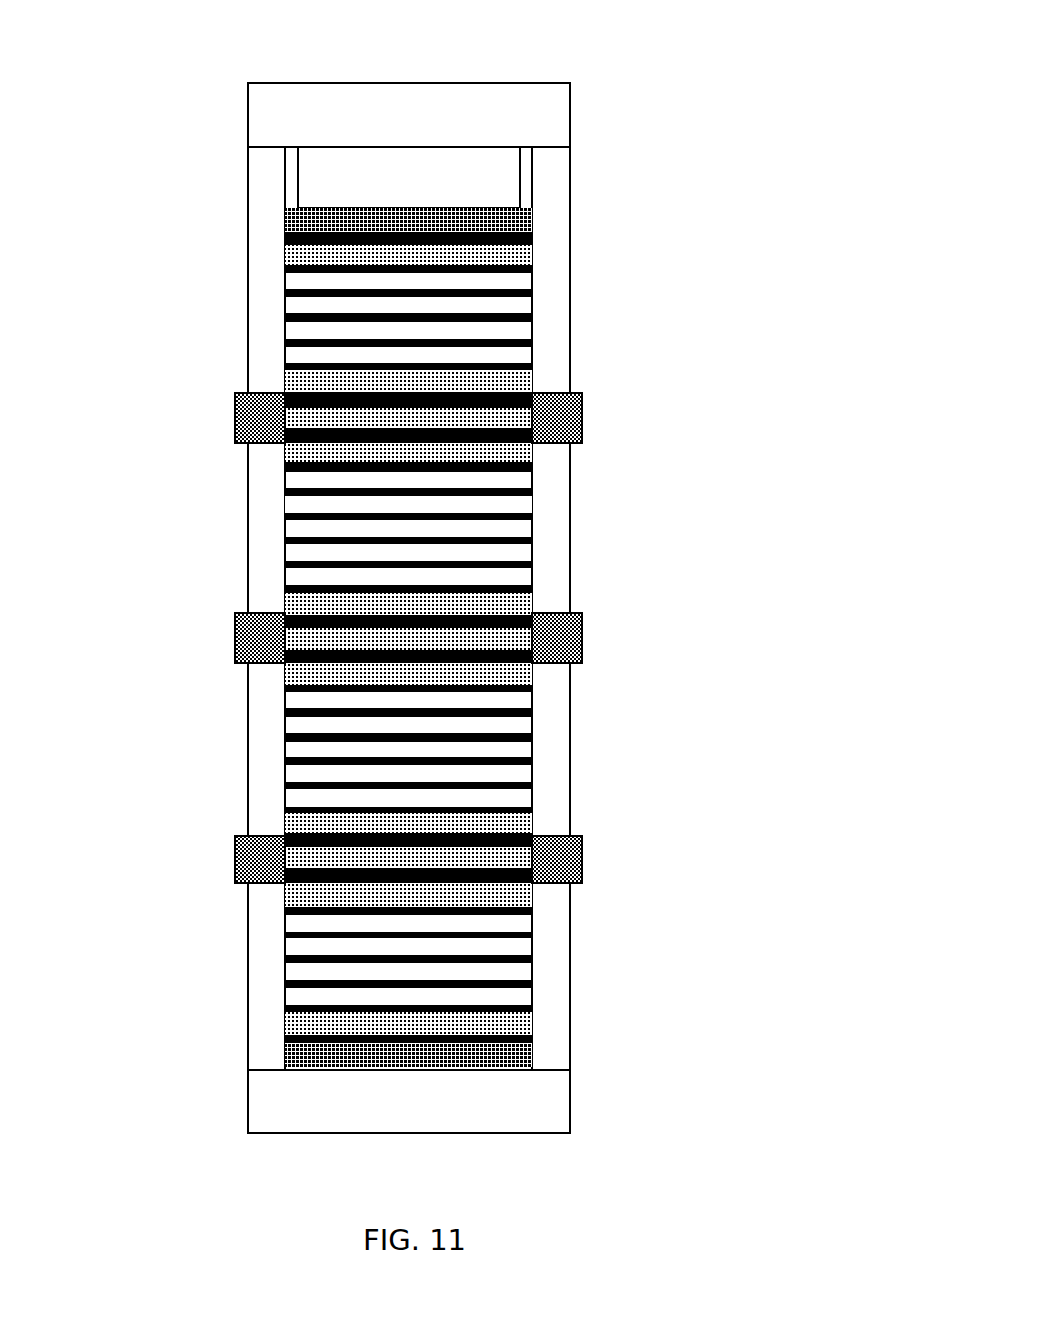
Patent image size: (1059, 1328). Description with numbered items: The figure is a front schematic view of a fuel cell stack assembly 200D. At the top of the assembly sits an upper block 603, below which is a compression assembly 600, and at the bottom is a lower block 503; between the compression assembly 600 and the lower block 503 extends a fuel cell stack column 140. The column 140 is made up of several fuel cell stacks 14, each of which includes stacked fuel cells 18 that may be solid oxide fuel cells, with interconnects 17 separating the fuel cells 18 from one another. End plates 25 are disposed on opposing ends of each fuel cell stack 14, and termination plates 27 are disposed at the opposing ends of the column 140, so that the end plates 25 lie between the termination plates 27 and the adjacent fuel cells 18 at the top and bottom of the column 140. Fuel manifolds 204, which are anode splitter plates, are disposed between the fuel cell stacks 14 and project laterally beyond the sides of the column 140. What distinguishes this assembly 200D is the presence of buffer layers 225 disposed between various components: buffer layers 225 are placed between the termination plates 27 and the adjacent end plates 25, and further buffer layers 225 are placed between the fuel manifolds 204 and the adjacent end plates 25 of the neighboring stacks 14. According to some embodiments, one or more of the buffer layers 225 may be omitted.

The fuel cell stack assembly 200D is at (468, 566).
The upper block 603 is at (442, 132).
The compression assembly 600 is at (442, 191).
The lower block 503 is at (430, 1117).
The fuel cell stack column 140 is at (468, 608).
The termination plate 27 is at (533, 221).
The end plate 25 is at (533, 257).
The buffer layer 225 is at (285, 238).
The fuel cell 18 is at (533, 787).
The interconnect 17 is at (507, 503).
The fuel cell stack 14 is at (529, 638).
The fuel manifold 204 is at (235, 642).